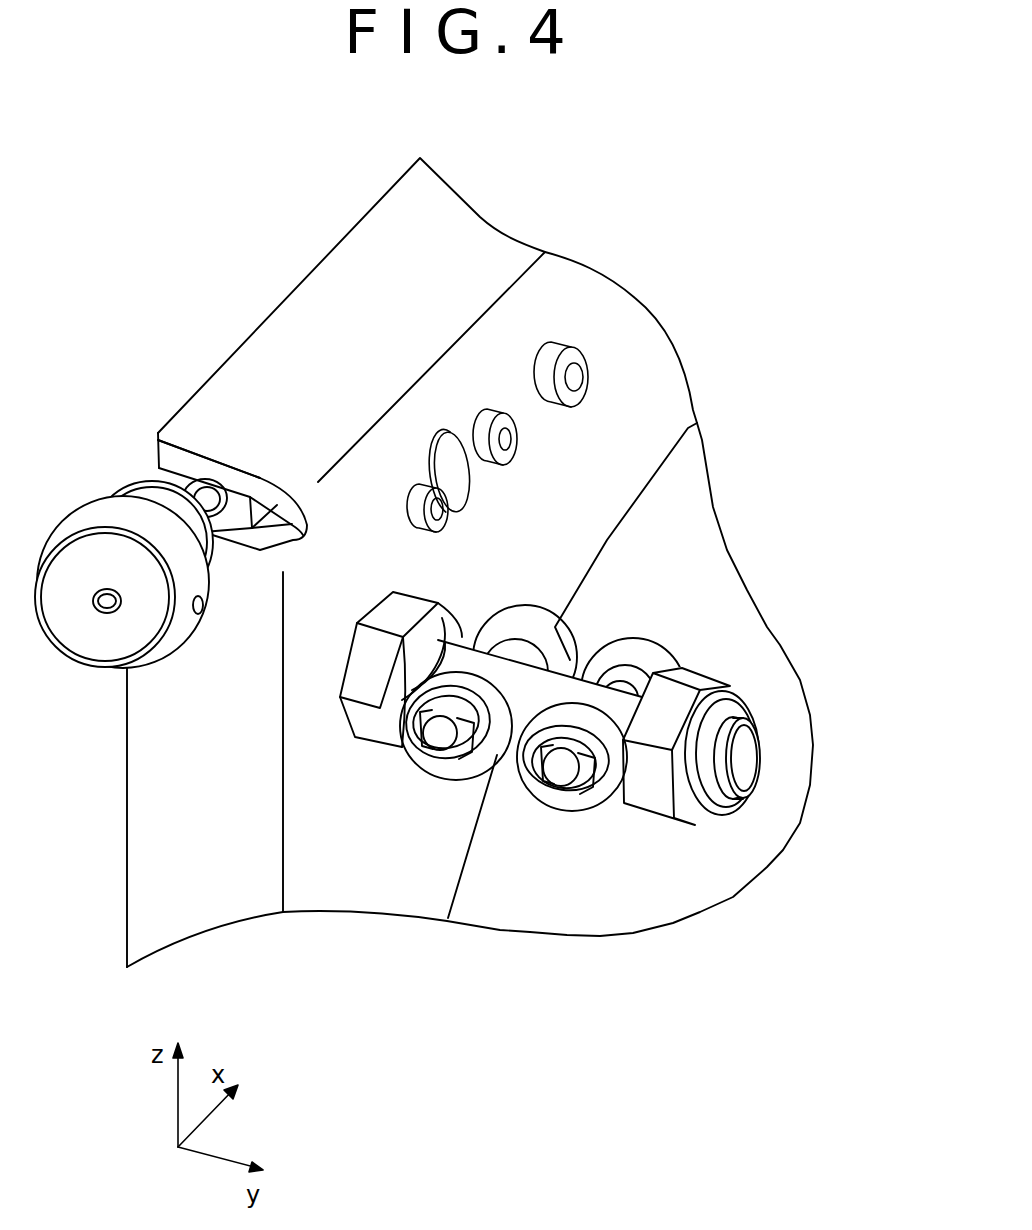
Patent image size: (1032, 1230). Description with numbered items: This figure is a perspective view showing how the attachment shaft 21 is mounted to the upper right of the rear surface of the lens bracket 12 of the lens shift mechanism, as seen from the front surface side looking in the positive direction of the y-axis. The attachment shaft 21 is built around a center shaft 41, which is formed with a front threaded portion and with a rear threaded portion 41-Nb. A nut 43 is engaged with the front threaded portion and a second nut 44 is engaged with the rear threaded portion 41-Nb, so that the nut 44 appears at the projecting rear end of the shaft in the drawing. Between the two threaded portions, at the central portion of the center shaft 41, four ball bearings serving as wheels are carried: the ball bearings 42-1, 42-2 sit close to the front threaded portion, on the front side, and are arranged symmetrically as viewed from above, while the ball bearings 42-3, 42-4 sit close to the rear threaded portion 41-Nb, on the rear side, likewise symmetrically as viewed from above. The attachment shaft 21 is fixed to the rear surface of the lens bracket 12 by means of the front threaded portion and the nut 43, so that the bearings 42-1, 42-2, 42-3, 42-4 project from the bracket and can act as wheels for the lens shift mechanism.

The lens bracket 12 is at (268, 362).
The attachment shaft 21 is at (620, 842).
The center shaft 41 is at (548, 683).
The threaded portion 41-Nb is at (738, 772).
The ball bearing (wheel) 42-1 is at (442, 763).
The ball bearing (wheel) 42-2 is at (515, 620).
The ball bearing (wheel) 42-3 is at (562, 795).
The ball bearing (wheel) 42-4 is at (638, 653).
The nut 43 is at (363, 685).
The nut 44 is at (670, 690).